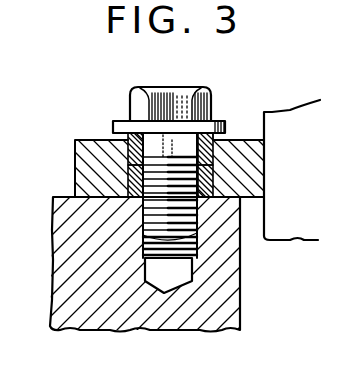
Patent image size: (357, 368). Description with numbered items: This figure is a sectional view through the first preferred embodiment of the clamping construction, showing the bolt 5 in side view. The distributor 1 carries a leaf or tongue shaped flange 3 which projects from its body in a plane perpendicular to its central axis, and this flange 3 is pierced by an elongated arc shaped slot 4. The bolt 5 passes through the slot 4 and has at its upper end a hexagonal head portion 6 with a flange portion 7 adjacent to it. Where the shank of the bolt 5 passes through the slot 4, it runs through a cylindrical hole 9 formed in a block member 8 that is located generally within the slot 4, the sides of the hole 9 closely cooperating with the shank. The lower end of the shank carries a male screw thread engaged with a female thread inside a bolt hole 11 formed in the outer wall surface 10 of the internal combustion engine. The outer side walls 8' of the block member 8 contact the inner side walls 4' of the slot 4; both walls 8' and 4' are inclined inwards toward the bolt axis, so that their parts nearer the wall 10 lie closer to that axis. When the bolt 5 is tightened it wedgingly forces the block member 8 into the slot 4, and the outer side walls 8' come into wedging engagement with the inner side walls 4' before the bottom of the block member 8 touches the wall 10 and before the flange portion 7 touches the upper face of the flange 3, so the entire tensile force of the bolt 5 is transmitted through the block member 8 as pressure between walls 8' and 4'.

The distributor 1 is at (288, 123).
The flange 3 is at (76, 154).
The elongated slot 4 is at (154, 195).
The inner side walls of the elongated slot 4' is at (170, 165).
The bolt 5 is at (214, 138).
The head portion 6 is at (172, 87).
The flange portion 7 is at (222, 119).
The block member 8 is at (159, 108).
The outer side walls of the block member 8' is at (171, 180).
The cylindrical hole 9 is at (147, 137).
The outer wall surface of the internal combustion engine 10 is at (233, 297).
The bolt hole 11 is at (141, 229).